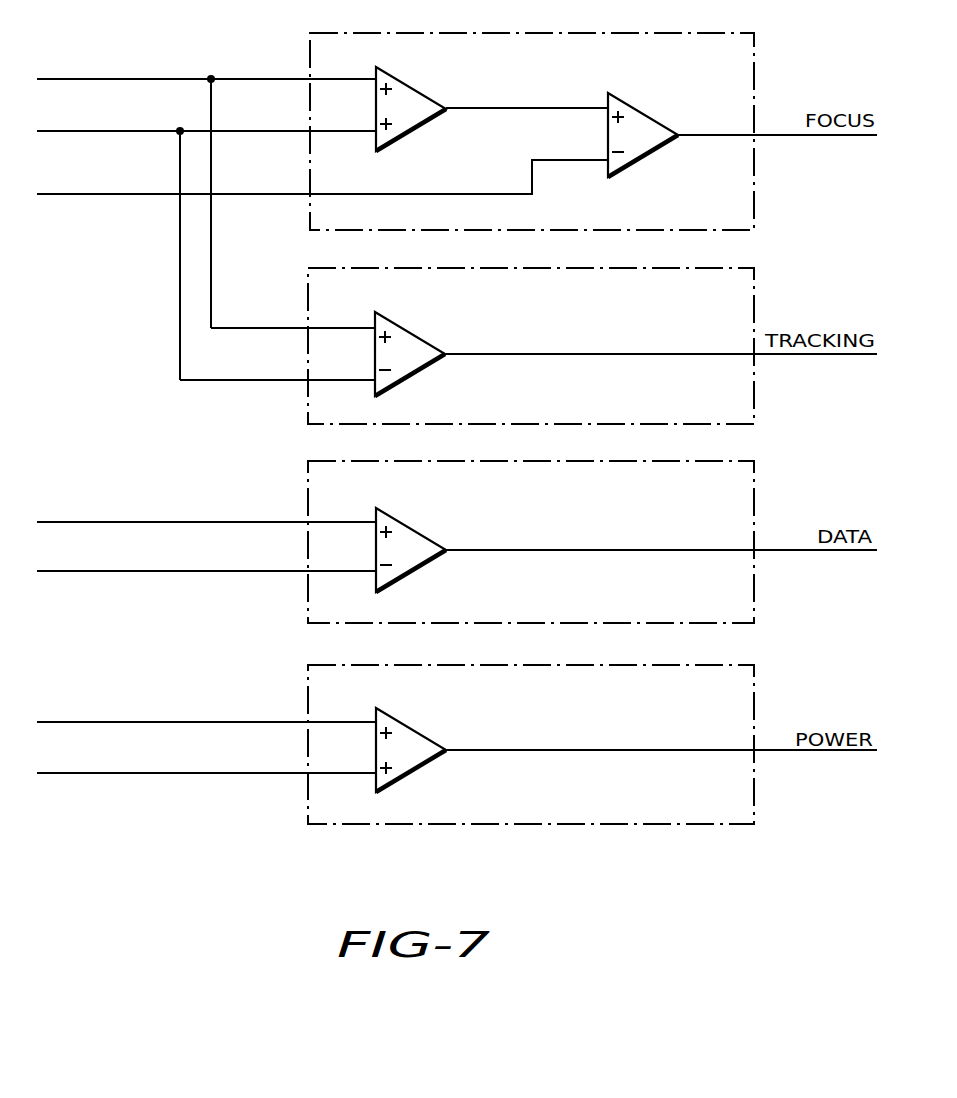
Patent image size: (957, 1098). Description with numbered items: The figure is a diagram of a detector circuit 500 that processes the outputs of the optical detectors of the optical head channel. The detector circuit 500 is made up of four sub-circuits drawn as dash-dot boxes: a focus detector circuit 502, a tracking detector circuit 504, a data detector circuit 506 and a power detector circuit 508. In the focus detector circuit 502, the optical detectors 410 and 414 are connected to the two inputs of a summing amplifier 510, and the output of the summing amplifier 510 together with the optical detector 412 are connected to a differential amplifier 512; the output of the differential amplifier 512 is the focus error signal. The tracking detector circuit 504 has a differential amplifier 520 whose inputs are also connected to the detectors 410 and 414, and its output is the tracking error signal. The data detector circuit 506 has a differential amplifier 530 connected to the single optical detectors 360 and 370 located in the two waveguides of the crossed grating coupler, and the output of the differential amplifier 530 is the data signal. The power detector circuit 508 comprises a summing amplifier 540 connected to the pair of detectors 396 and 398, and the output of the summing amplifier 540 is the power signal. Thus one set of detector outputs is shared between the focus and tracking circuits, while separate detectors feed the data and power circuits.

The optical detector 410 is at (90, 79).
The optical detector 414 is at (92, 131).
The optical detector 412 is at (90, 194).
The optical detector 360 is at (90, 521).
The optical detector 370 is at (92, 570).
The detector 396 is at (93, 721).
The detector 398 is at (98, 773).
The detector circuit 500 is at (284, 862).
The focus detector circuit 502 is at (689, 33).
The tracking detector circuit 504 is at (701, 270).
The data detector circuit 506 is at (698, 464).
The power detector circuit 508 is at (698, 668).
The summing amplifier 510 is at (427, 68).
The differential amplifier 512 is at (648, 112).
The differential amplifier 520 is at (421, 332).
The differential amplifier 530 is at (421, 517).
The summing amplifier 540 is at (421, 717).